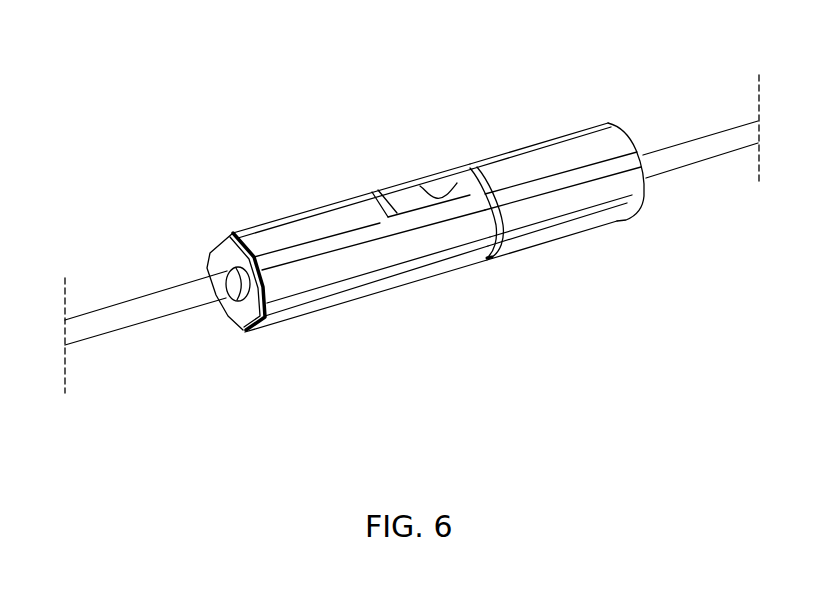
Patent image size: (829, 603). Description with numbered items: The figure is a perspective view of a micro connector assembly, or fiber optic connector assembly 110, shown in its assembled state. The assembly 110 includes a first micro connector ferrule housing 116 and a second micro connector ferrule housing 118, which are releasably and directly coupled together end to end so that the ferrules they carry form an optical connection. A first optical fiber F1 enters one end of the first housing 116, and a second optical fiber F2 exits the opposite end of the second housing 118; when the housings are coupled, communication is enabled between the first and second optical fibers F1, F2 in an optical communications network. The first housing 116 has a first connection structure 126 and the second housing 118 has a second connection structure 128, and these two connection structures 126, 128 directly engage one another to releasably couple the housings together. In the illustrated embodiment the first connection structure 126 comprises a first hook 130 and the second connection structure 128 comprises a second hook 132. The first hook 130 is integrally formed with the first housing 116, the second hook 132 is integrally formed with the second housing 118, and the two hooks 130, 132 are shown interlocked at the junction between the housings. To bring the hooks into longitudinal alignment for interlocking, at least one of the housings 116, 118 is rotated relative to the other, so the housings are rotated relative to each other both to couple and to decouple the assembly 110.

The fiber optic connector assembly 110 is at (412, 237).
The first micro connector ferrule housing 116 is at (262, 194).
The second micro connector ferrule housing 118 is at (515, 127).
The first connection structure 126 is at (414, 192).
The second connection structure 128 is at (414, 192).
The first hook 130 is at (458, 188).
The second hook 132 is at (421, 199).
The first optical fiber F1 is at (137, 308).
The second optical fiber F2 is at (695, 153).